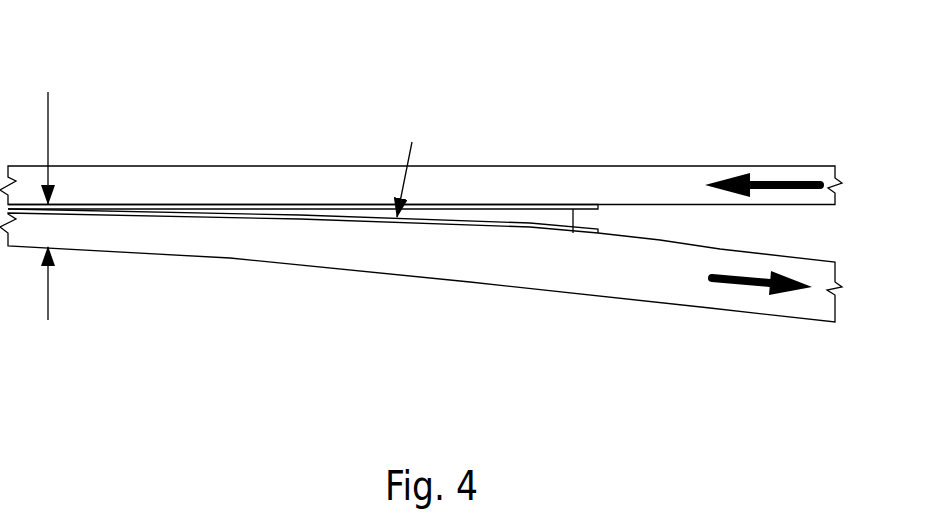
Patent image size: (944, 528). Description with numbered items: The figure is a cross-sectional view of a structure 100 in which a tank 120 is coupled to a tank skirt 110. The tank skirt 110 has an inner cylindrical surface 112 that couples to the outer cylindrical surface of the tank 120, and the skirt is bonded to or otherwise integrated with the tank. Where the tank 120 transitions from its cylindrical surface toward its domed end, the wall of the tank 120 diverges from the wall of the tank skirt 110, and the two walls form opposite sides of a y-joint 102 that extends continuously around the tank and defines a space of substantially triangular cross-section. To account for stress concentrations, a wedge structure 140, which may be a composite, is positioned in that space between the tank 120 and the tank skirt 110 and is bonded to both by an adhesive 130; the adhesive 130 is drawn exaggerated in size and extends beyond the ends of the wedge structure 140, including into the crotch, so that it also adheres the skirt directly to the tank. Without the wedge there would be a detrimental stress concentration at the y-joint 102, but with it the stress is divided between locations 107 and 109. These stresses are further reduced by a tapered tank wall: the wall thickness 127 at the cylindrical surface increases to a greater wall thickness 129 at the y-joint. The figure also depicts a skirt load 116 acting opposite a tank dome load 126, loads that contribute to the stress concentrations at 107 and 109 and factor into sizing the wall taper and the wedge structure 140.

The structure 100 is at (450, 211).
The tank skirt 110 is at (200, 192).
The tank 120 is at (141, 227).
The adhesive 130 is at (595, 203).
The stress concentration location 107 is at (572, 200).
The y-joint 102 is at (358, 206).
The wedge structure 140 is at (495, 215).
The skirt load 116 is at (755, 181).
The tank dome load 126 is at (753, 288).
The inner cylindrical surface 112 is at (788, 210).
The wall thickness 127 is at (48, 228).
The wall thickness 129 is at (383, 273).
The stress concentration location 109 is at (568, 240).